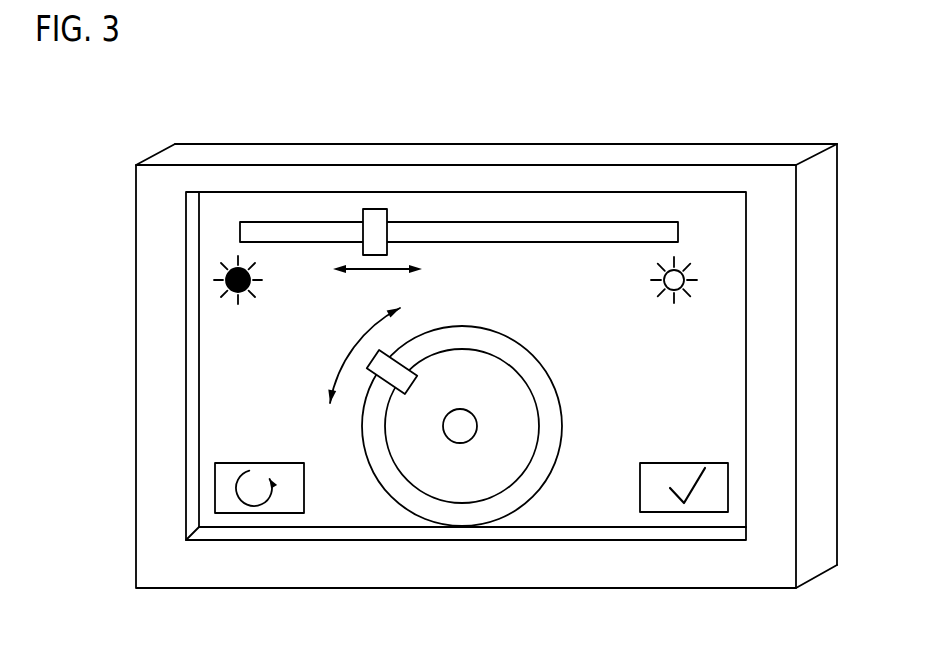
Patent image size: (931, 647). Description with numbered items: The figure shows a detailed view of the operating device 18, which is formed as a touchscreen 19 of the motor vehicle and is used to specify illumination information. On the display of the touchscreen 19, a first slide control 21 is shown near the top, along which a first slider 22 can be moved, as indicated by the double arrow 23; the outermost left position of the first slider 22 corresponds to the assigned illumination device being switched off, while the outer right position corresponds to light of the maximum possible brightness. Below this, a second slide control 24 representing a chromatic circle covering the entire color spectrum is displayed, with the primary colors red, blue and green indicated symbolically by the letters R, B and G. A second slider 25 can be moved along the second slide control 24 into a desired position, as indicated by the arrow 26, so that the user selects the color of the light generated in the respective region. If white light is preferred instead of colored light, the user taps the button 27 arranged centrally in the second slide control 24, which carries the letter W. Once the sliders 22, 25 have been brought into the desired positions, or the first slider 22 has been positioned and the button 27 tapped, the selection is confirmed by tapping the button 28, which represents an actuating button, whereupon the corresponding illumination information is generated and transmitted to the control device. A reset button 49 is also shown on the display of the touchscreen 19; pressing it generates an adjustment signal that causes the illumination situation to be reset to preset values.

The operating device 18 is at (416, 113).
The touchscreen 19 is at (555, 143).
The first slide control 21 is at (533, 258).
The first slider 22 is at (369, 208).
The double arrow 23 is at (373, 272).
The second slide control 24 is at (556, 356).
The second slider 25 is at (412, 387).
The arrow 26 is at (352, 357).
The button 27 is at (480, 425).
The button 28 is at (666, 463).
The reset button 49 is at (240, 462).